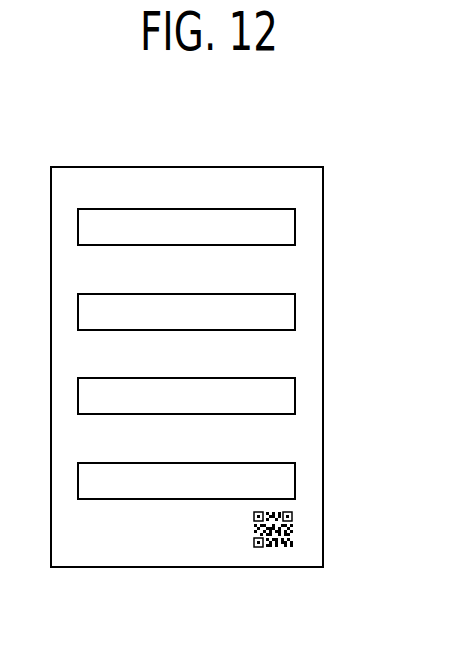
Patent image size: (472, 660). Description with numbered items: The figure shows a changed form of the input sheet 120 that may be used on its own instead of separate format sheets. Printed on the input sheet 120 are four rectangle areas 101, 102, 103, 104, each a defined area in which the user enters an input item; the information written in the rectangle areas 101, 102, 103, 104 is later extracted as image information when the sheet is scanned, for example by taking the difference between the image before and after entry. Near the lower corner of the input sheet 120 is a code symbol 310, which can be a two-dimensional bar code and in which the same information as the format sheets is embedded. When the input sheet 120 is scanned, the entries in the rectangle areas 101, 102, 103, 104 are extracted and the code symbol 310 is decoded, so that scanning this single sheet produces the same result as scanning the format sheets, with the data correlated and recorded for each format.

The input sheet 120 is at (296, 147).
The rectangle area 101 is at (295, 222).
The rectangle area 102 is at (295, 307).
The rectangle area 103 is at (295, 392).
The rectangle area 104 is at (295, 476).
The code symbol 310 is at (291, 530).